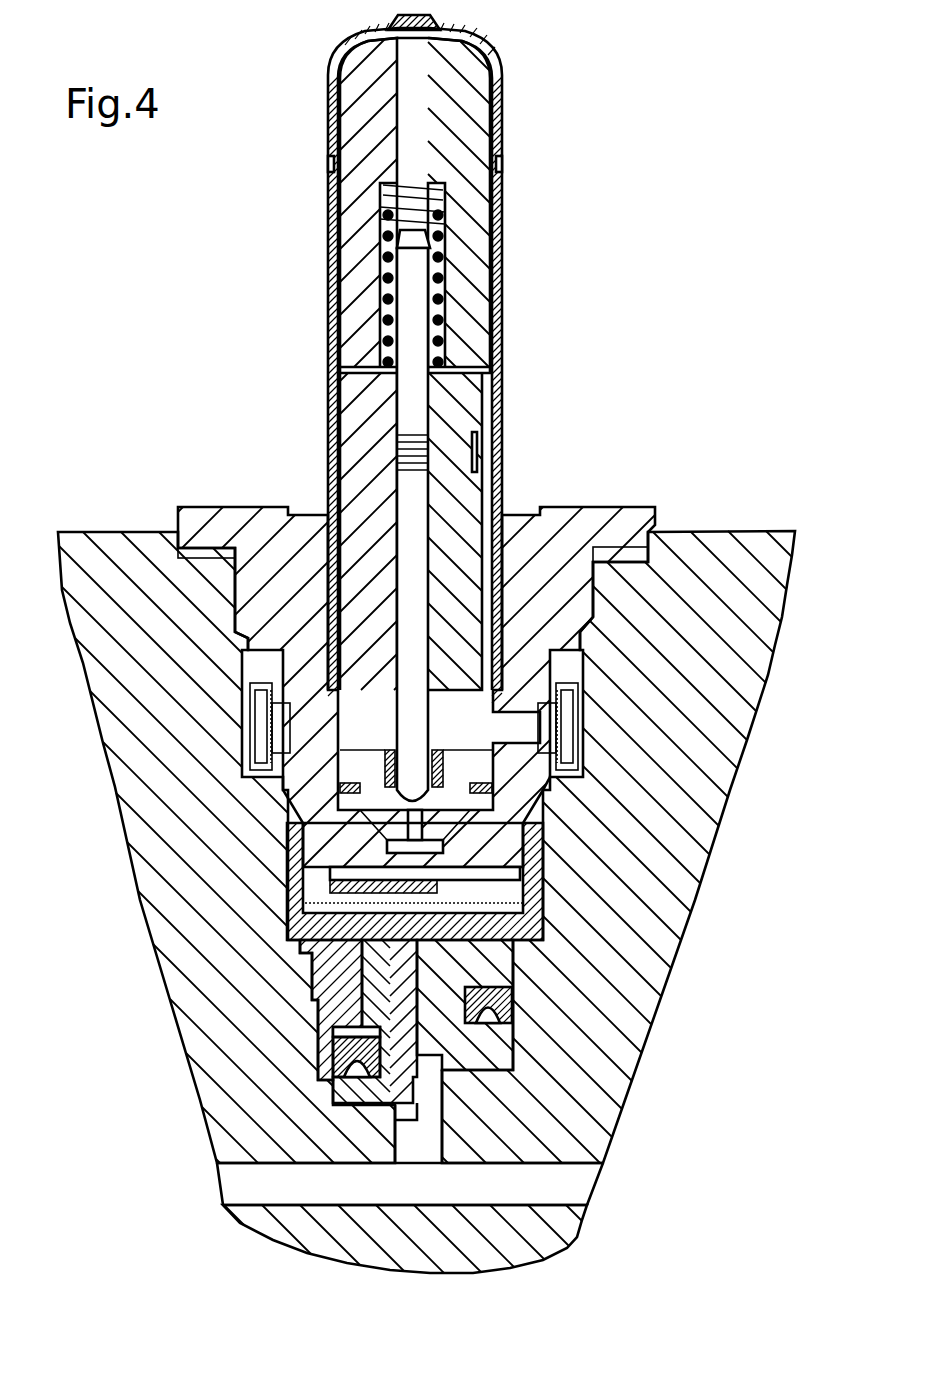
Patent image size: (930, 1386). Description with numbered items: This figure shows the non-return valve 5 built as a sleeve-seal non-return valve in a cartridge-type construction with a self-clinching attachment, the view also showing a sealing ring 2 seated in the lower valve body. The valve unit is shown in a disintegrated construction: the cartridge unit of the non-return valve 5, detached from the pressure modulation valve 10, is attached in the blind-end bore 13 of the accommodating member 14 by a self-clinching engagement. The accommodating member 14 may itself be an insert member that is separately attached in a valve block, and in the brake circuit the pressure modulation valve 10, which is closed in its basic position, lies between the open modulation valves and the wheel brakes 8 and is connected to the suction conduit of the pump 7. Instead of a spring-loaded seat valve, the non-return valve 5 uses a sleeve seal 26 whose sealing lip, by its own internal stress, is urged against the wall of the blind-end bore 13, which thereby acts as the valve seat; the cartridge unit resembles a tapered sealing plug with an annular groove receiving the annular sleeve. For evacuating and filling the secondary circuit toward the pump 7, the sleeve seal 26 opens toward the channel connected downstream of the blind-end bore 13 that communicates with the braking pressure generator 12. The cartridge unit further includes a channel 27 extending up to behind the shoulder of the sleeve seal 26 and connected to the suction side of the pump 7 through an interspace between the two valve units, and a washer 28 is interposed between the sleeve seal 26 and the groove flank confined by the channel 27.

The sealing ring 2 is at (518, 982).
The non-return valve 5 is at (497, 1057).
The pump 7 is at (135, 917).
The wheel brakes 8 is at (60, 717).
The pressure modulation valve 10 is at (267, 511).
The braking pressure generator 12 is at (215, 1187).
The blind-end bore 13 is at (453, 1067).
The accommodating member 14 is at (683, 535).
The sleeve seal 26 is at (336, 1064).
The channel 27 is at (333, 977).
The washer 28 is at (340, 1029).